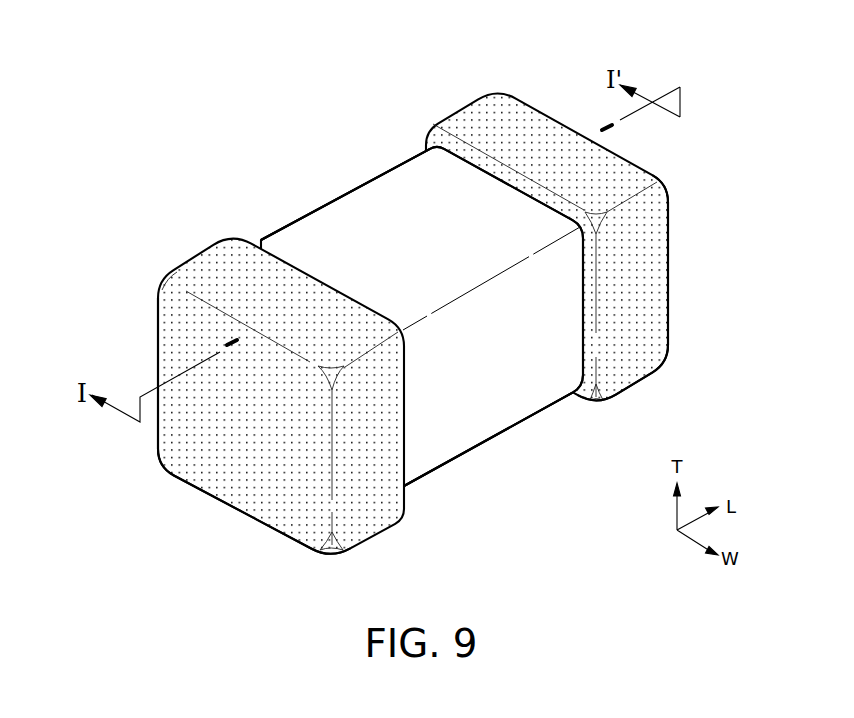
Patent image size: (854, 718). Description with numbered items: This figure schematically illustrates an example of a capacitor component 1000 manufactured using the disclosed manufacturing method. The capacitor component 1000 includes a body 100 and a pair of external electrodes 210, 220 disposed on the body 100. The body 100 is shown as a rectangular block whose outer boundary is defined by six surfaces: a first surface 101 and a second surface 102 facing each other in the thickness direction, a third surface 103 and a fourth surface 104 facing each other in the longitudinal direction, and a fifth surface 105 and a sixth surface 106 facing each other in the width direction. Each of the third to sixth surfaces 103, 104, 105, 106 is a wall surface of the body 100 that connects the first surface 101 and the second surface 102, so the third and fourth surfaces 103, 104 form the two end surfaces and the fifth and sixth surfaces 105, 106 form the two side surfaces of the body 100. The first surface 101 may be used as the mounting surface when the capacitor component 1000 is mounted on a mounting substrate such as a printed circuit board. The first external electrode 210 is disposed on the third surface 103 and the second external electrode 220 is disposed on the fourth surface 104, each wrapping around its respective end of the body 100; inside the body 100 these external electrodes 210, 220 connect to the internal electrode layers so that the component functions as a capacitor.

The capacitor component 1000 is at (442, 293).
The body 100 is at (415, 150).
The first surface 101 is at (453, 403).
The second surface 102 is at (368, 213).
The third surface 103 is at (247, 465).
The fourth surface 104 is at (617, 260).
The fifth surface 105 is at (498, 383).
The sixth surface 106 is at (350, 247).
The first external electrode 210 is at (213, 272).
The second external electrode 220 is at (475, 120).